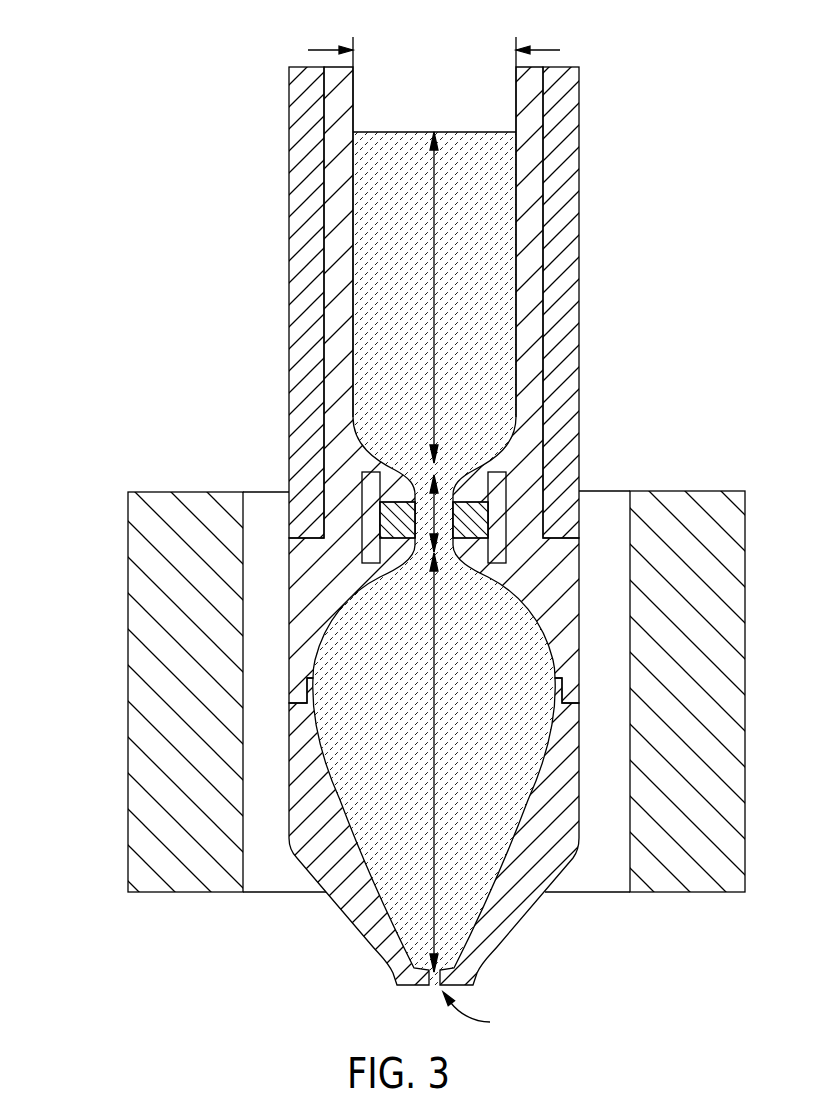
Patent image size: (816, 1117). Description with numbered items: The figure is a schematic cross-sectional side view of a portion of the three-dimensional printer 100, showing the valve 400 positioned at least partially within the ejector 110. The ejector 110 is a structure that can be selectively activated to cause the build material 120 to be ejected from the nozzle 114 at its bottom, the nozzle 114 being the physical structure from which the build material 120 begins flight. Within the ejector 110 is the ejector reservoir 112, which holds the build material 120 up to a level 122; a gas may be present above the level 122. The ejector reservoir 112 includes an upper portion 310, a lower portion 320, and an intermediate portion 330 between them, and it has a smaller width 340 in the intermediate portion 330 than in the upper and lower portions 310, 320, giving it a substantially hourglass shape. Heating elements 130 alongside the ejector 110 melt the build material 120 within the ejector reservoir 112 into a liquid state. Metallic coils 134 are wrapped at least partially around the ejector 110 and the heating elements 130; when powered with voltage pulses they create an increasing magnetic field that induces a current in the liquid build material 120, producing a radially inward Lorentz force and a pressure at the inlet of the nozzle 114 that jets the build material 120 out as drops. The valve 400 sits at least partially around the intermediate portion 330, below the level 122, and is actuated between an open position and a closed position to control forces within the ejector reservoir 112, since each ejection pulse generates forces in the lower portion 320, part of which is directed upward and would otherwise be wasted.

The 3D printer 100 is at (390, 520).
The ejector 110 is at (331, 337).
The ejector reservoir 112 is at (483, 40).
The nozzle 114 is at (328, 923).
The build material 120 is at (414, 191).
The level 122 is at (500, 133).
The heating elements 130 is at (288, 187).
The metallic coils 134 is at (108, 737).
The upper portion 310 is at (434, 220).
The lower portion 320 is at (433, 837).
The intermediate portion 330 is at (427, 492).
The width 340 is at (560, 50).
The valve 400 is at (525, 503).